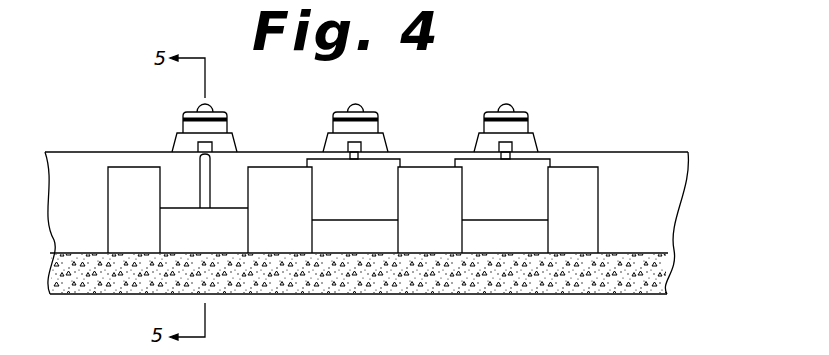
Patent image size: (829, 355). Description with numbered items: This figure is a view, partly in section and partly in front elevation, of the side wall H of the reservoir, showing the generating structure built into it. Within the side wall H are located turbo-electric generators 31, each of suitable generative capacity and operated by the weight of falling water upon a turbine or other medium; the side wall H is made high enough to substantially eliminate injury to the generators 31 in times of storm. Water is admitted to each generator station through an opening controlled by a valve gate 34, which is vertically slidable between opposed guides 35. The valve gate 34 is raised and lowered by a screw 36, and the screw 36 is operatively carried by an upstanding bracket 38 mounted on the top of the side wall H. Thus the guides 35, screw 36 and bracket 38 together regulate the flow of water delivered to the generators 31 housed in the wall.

The turbo-electric generator 31 is at (363, 127).
The valve gate 34 is at (217, 230).
The guides 35 is at (122, 185).
The screw 36 is at (203, 190).
The upstanding bracket 38 is at (200, 147).
The side wall H is at (653, 167).